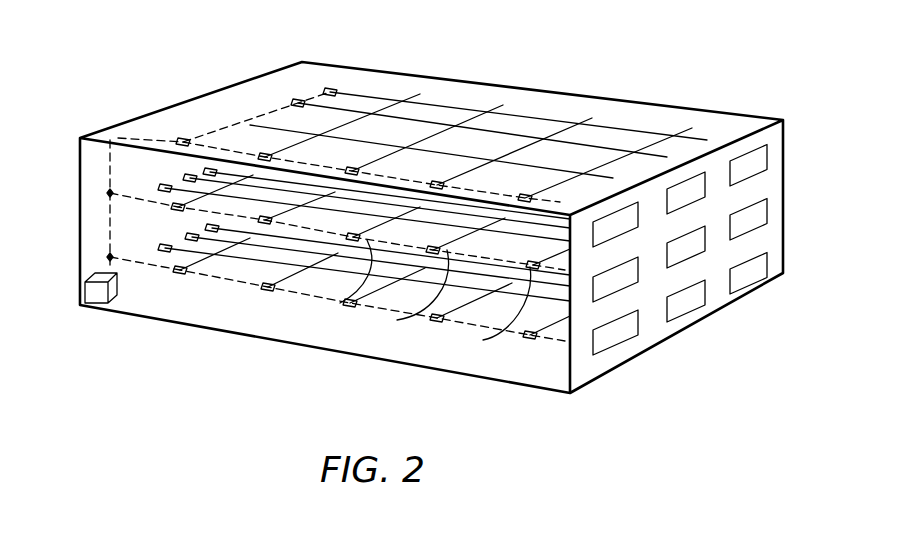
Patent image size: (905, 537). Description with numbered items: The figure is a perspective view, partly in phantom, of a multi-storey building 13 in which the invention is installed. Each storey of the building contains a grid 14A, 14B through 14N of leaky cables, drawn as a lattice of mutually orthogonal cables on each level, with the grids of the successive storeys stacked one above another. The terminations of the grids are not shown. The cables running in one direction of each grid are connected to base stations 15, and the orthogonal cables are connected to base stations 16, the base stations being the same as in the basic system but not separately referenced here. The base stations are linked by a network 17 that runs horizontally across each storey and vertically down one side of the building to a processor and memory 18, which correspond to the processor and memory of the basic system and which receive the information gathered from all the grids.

The multi-storey building 13 is at (783, 193).
The grid of leaky cables 14N is at (160, 85).
The grid of leaky cables 14B is at (60, 170).
The grid of leaky cables 14A is at (62, 258).
The base stations 15 is at (520, 192).
The base stations 16 is at (326, 88).
The network 17 is at (383, 178).
The processor and memory 18 is at (98, 297).